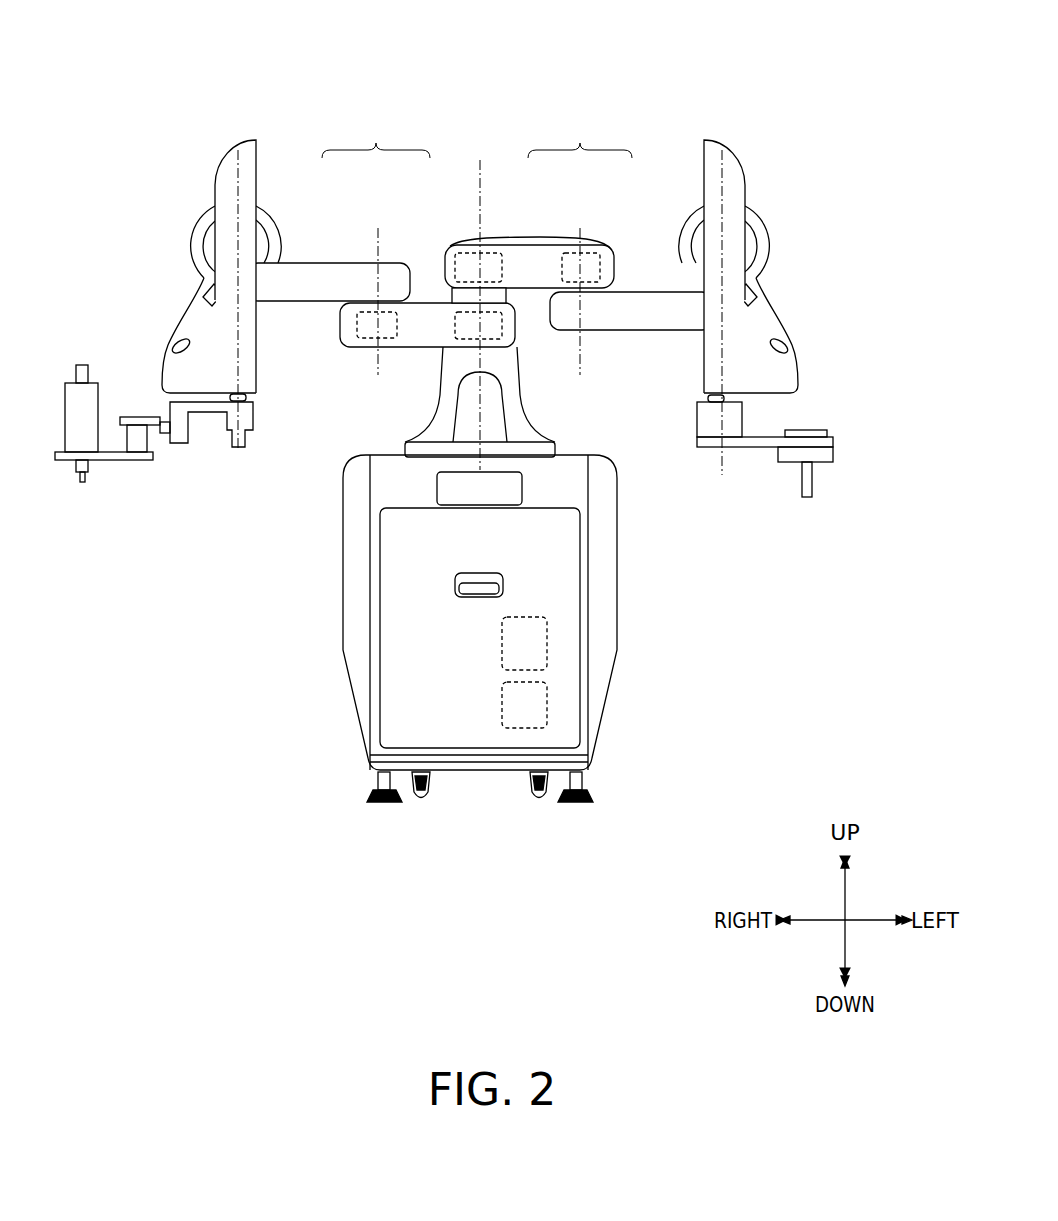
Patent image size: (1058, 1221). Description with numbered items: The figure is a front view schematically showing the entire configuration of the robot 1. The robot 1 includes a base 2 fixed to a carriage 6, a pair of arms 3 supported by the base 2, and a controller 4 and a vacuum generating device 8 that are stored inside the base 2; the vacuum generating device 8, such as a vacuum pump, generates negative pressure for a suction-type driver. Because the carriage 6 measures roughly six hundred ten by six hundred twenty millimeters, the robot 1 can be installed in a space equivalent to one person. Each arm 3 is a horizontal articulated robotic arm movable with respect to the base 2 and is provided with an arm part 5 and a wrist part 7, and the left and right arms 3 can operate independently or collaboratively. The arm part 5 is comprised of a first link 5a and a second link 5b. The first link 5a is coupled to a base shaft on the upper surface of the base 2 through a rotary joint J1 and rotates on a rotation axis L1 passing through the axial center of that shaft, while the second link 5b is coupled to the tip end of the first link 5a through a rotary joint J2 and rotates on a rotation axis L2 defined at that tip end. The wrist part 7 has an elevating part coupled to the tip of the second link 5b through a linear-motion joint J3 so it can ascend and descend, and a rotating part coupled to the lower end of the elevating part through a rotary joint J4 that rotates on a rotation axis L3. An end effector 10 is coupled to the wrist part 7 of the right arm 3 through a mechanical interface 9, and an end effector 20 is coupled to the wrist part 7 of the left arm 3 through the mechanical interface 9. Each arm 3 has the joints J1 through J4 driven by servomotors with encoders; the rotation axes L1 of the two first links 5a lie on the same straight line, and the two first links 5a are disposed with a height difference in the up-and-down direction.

The robot 1 is at (670, 102).
The base 2 is at (530, 400).
The arm 3 is at (254, 133).
The controller 4 is at (548, 640).
The arm part 5 is at (477, 135).
The first link 5a is at (437, 302).
The second link 5b is at (318, 262).
The carriage 6 is at (618, 556).
The wrist part 7 is at (195, 318).
The vacuum generating device 8 is at (548, 706).
The mechanical interface 9 is at (242, 420).
The end effector 10 is at (78, 352).
The end effector 20 is at (880, 425).
The rotary joint J1 is at (466, 240).
The rotary joint J2 is at (343, 320).
The linear-motion joint J3 is at (228, 184).
The rotary joint J4 is at (248, 398).
The rotation axis L1 is at (477, 309).
The rotation axis L2 is at (478, 287).
The rotation axis L3 is at (236, 162).